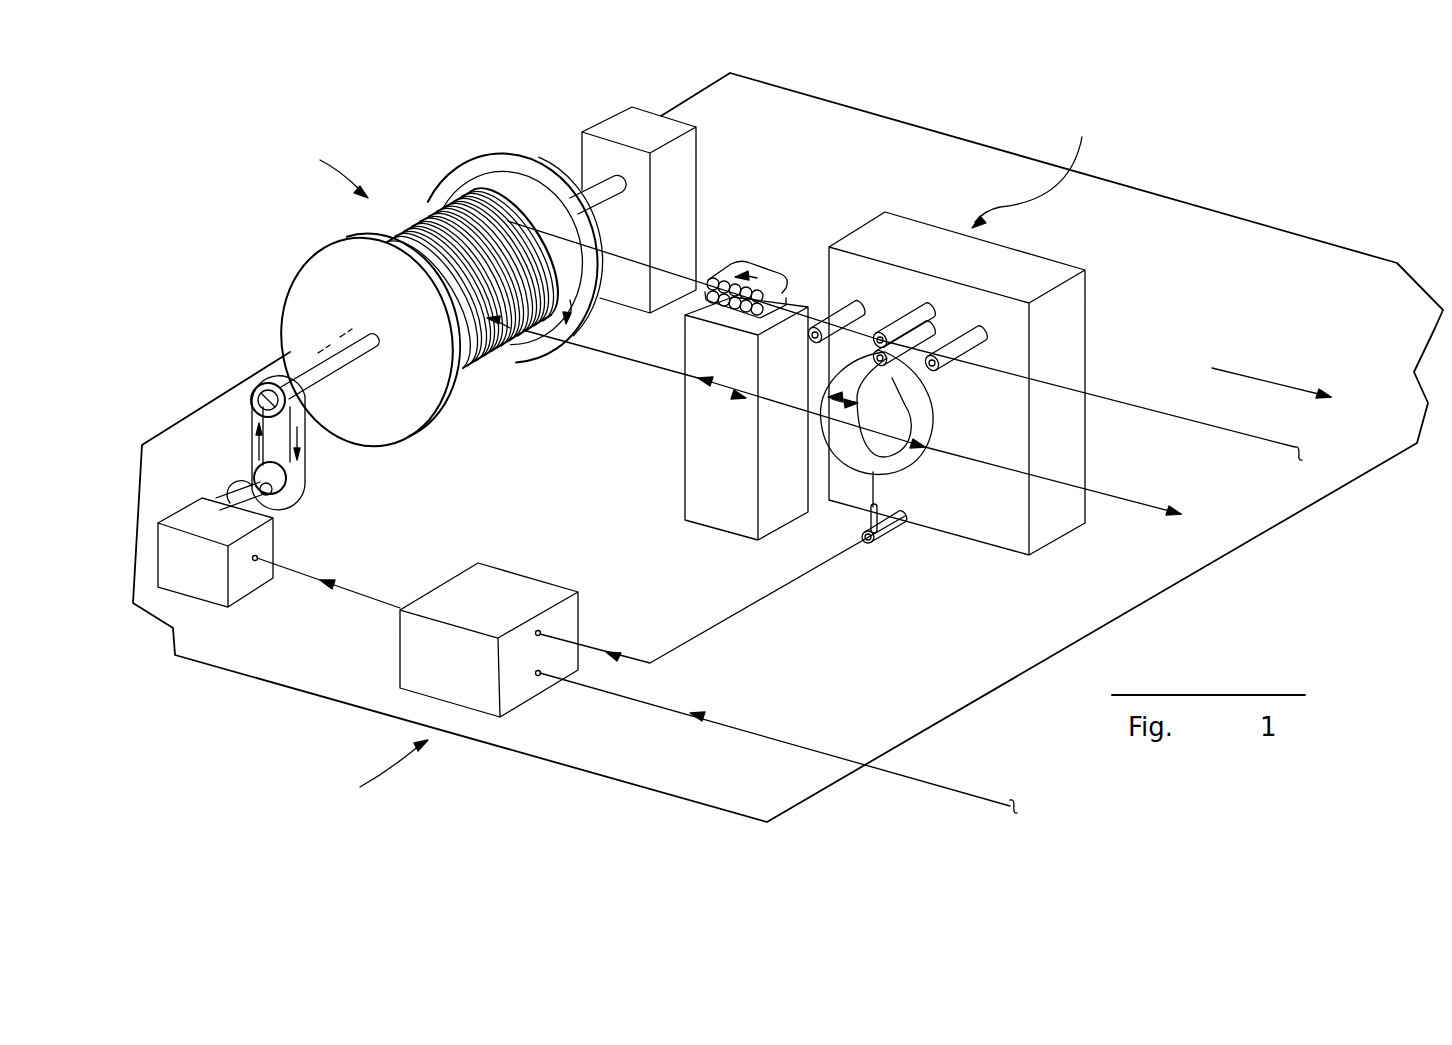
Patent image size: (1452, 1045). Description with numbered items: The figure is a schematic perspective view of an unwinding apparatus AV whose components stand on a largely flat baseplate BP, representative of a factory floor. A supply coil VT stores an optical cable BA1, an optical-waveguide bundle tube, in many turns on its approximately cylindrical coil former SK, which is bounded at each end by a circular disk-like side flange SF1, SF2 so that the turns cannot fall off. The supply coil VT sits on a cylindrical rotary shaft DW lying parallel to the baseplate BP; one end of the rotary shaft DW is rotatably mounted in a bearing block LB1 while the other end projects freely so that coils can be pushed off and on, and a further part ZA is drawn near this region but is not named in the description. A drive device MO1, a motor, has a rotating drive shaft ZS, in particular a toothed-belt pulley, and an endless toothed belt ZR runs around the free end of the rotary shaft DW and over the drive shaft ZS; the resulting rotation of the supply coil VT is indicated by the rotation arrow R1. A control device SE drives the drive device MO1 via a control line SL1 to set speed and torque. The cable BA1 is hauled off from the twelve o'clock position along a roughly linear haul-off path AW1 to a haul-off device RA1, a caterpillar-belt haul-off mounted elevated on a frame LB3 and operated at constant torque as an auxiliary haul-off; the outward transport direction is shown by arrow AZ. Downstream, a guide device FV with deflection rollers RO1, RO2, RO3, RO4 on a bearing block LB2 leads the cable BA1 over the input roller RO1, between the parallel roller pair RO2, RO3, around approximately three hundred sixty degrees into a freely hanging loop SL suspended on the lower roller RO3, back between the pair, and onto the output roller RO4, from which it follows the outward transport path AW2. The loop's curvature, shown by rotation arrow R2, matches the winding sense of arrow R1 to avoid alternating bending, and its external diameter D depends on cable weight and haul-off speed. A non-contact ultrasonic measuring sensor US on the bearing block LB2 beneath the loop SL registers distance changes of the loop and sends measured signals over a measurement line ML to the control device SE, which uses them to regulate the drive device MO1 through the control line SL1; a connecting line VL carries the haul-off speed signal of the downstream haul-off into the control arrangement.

The supply coil VT is at (414, 253).
The side flange SF1 is at (315, 270).
The rotary shaft DW is at (318, 353).
The drive axle ZA is at (322, 362).
The rotation arrow R1 is at (460, 160).
The side flange SF2 is at (517, 157).
The coil former SK is at (472, 365).
The longitudinal haul-off path AW1 is at (633, 358).
The outward transport path AW2 is at (1135, 498).
The bearing block LB1 is at (632, 128).
The optical cable BA1 is at (667, 268).
The haul-off device RA1 is at (770, 250).
The frame LB3 is at (716, 452).
The first deflection roller RO1 is at (843, 307).
The deflection roller RO2 is at (913, 315).
The lower guide roller RO3 is at (910, 348).
The output-side deflection roller RO4 is at (983, 337).
The guide device FV is at (1091, 282).
The bearing block LB2 is at (1067, 340).
The arrow AZ is at (1248, 375).
The loop SL is at (923, 467).
The rotation arrow R2 is at (877, 400).
The external diameter D is at (867, 417).
The measuring sensor US is at (895, 525).
The measurement line ML is at (742, 612).
The connecting line VL is at (765, 738).
The control device SE is at (430, 660).
The control line SL1 is at (363, 590).
The drive device MO1 is at (198, 585).
The drive shaft ZS is at (220, 505).
The toothed belt ZR is at (250, 440).
The unwinding apparatus AV is at (370, 769).
The baseplate BP is at (650, 760).